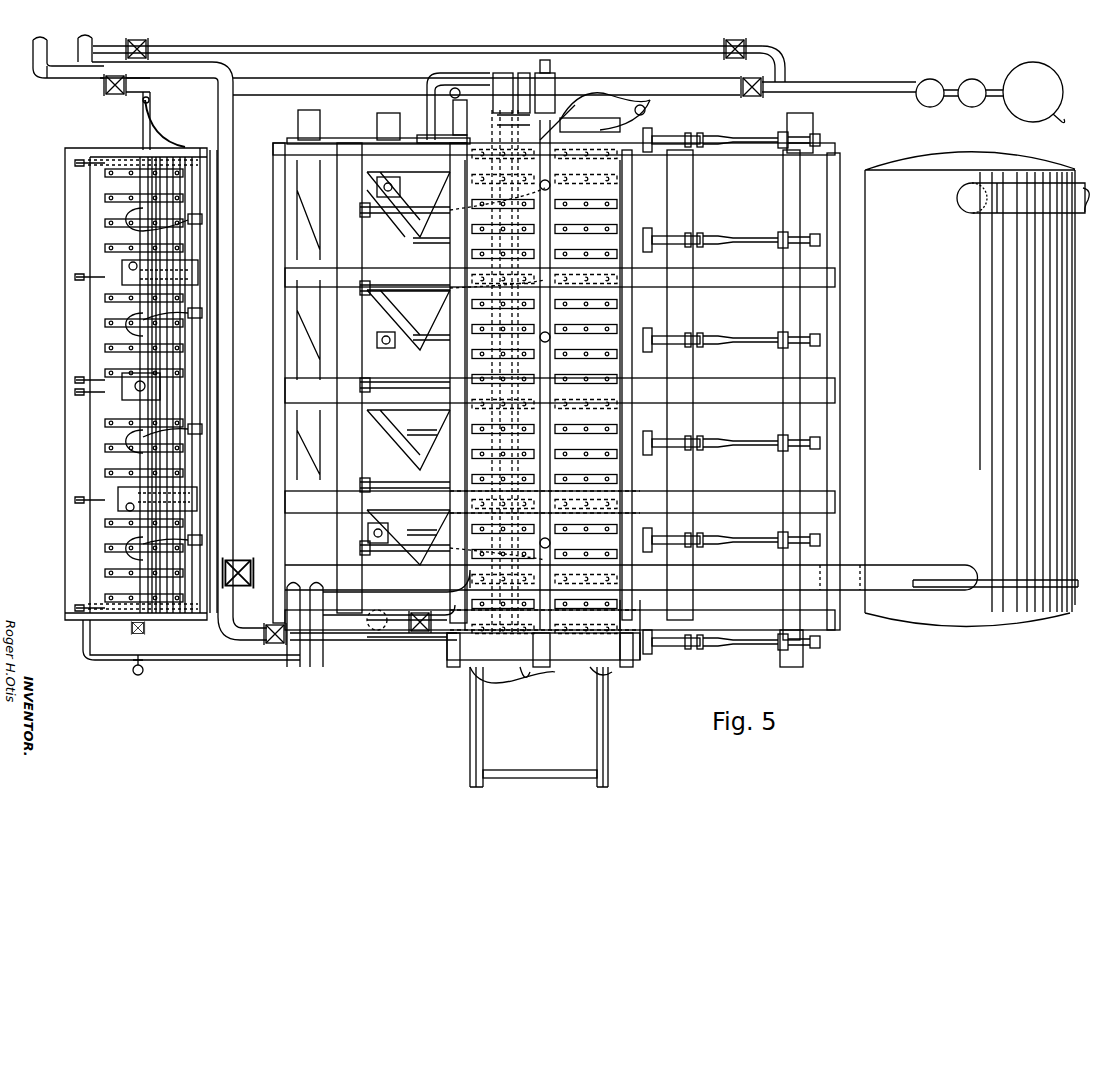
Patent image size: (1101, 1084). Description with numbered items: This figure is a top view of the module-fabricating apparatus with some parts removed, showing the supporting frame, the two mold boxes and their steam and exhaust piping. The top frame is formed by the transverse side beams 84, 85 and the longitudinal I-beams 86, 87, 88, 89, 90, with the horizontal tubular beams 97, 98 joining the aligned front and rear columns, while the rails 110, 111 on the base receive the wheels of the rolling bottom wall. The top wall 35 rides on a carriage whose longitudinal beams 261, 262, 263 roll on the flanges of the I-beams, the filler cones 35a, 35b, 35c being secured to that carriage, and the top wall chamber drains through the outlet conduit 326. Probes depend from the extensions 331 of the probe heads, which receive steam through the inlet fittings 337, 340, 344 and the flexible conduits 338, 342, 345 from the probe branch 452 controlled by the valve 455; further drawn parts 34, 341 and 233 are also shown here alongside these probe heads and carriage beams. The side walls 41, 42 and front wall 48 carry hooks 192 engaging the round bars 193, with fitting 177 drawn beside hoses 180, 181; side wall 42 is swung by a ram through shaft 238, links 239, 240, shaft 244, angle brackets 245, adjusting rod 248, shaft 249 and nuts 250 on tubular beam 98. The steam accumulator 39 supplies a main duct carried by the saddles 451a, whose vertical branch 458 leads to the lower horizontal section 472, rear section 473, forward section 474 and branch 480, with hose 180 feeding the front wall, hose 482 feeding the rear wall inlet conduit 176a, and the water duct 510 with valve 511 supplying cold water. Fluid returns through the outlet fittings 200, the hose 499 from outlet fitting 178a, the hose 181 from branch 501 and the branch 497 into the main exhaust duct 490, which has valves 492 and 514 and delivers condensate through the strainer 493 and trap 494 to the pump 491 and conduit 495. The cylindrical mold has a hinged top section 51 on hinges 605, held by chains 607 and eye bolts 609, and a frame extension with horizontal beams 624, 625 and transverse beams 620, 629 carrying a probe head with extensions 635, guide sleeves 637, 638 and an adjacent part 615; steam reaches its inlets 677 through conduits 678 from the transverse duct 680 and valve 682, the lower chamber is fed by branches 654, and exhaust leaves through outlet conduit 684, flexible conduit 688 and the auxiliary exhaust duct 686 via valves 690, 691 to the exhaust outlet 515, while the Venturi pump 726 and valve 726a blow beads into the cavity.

The hopper block 34 is at (378, 525).
The top wall 35 is at (590, 625).
The filler cone 35a is at (315, 460).
The filler cone 35b is at (315, 330).
The filler cone 35c is at (315, 222).
The steam accumulator 39 is at (900, 170).
The side wall 41 is at (440, 652).
The side wall 42 is at (630, 668).
The front wall 48 is at (543, 643).
The top semi-cylindrical section 51 is at (95, 535).
The transverse side member or beam 84 is at (280, 148).
The transverse side member or beam 85 is at (822, 621).
The longitudinally extending I-beam 86 is at (810, 638).
The longitudinally extending I-beam 87 is at (820, 500).
The longitudinally extending I-beam 88 is at (820, 385).
The longitudinally extending I-beam 89 is at (822, 276).
The longitudinally extending I-beam 90 is at (820, 160).
The horizontal tubular beam 97 is at (322, 128).
The horizontal tubular beam 98 is at (812, 124).
The rail 110 is at (470, 740).
The rail 111 is at (600, 728).
The inlet conduit 176a is at (598, 90).
The fitting 177 is at (525, 678).
The outlet conduit or fitting 178a is at (648, 90).
The flexible conduit or hose 180 is at (500, 680).
The flexible conduit or hose 181 is at (545, 677).
The hook 192 is at (455, 663).
The round bar 193 is at (465, 670).
The outlet conduit or fitting 200 is at (646, 108).
The cylinder assembly 233 is at (692, 205).
The shaft 238 is at (667, 545).
The link 239 is at (698, 540).
The pair of links 240 is at (662, 538).
The shaft 244 is at (650, 528).
The angle bracket 245 is at (650, 555).
The adjusting rod 248 is at (752, 532).
The shaft 249 is at (702, 547).
The nut 250 is at (784, 537).
The longitudinal channel member or beam 261 is at (675, 636).
The longitudinal channel member or beam 262 is at (665, 405).
The longitudinal channel member or beam 263 is at (668, 145).
The outlet conduit 326 is at (610, 133).
The extension 331 is at (588, 440).
The inlet fitting 337 is at (460, 497).
The flexible conduit 338 is at (380, 484).
The inlet fitting 340 is at (388, 180).
The block 341 is at (385, 330).
The flexible conduit 342 is at (395, 284).
The inlet fitting 344 is at (556, 165).
The flexible conduit or hose 345 is at (423, 198).
The saddle 451a is at (282, 545).
The probe branch 452 is at (345, 352).
The valve 455 is at (420, 633).
The vertical branch 458 is at (328, 630).
The lower horizontal section 472 is at (427, 104).
The rear section 473 is at (440, 73).
The section 474 is at (520, 73).
The branch 480 is at (543, 60).
The flexible conduit or hose 482 is at (560, 83).
The main exhaust duct 490 is at (303, 83).
The pump 491 is at (1034, 62).
The valve 492 is at (752, 98).
The strainer 493 is at (928, 79).
The reservoir or trap 494 is at (970, 79).
The conduit 495 is at (1057, 124).
The branch 497 is at (500, 128).
The flexible conduit or hose 499 is at (688, 84).
The branch 501 is at (550, 320).
The water duct 510 is at (234, 106).
The valve 511 is at (280, 652).
The valve 514 is at (116, 97).
The exhaust outlet 515 is at (83, 85).
The hinge 605 is at (590, 129).
The hold-down chain 607 is at (90, 488).
The eye bolt 609 is at (66, 563).
The block 615 is at (105, 362).
The transverse beam 620 is at (128, 410).
The horizontal beam 624 is at (256, 254).
The horizontal beam 625 is at (252, 476).
The transverse beam 629 is at (155, 410).
The lateral extension 635 is at (102, 575).
The vertical guide sleeve 637 is at (128, 263).
The vertical guide sleeve 638 is at (126, 510).
The branch 654 is at (82, 641).
The inlet 677 is at (118, 212).
The flexible conduit 678 is at (165, 315).
The transverse duct 680 is at (212, 178).
The valve 682 is at (242, 562).
The outlet conduit 684 is at (142, 138).
The auxiliary exhaust duct 686 is at (298, 50).
The flexible outlet conduit 688 is at (170, 128).
The valve 690 is at (147, 38).
The valve 691 is at (738, 46).
The Venturi pump 726 is at (136, 676).
The valve 726a is at (130, 640).